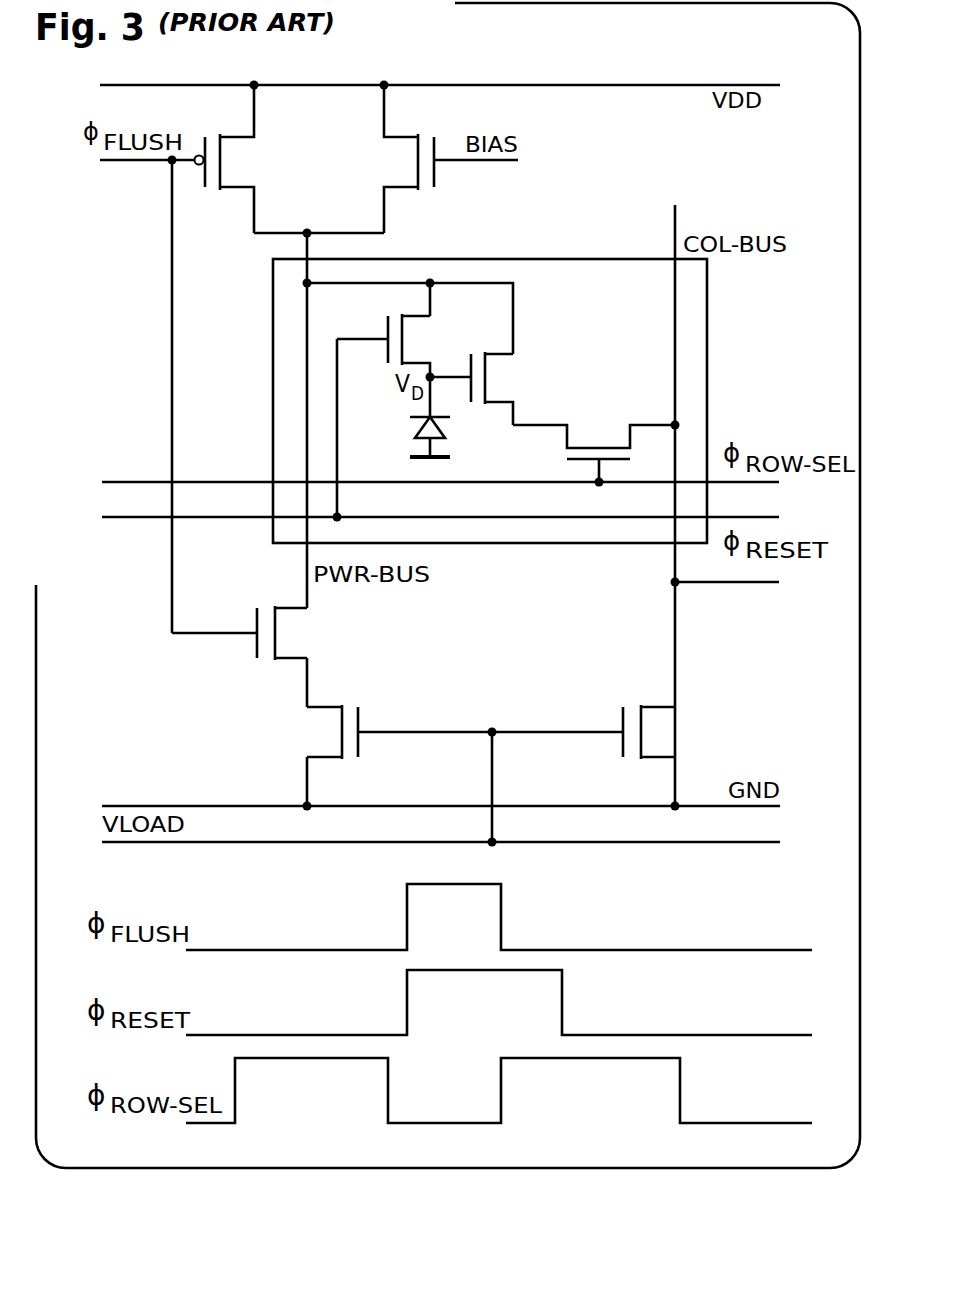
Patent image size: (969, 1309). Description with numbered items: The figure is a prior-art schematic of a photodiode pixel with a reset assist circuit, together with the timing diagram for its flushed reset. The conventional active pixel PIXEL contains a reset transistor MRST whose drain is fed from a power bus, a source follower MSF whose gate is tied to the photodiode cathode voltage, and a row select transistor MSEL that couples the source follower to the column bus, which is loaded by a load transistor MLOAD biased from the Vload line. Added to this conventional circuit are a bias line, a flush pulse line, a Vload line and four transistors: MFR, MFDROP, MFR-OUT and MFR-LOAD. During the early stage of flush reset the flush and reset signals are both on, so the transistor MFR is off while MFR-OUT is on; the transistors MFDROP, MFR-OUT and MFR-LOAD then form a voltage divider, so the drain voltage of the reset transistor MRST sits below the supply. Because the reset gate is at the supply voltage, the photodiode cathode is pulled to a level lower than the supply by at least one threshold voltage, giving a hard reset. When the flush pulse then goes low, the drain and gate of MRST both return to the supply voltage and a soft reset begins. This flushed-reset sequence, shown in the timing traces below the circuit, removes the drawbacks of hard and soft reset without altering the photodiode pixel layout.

The flush-reset transistor MFR is at (190, 159).
The flush drop transistor MFDROP is at (386, 159).
The pixel PIXEL is at (490, 401).
The reset transistor MRST is at (407, 365).
The source follower transistor MSF is at (487, 388).
The row select transistor MSEL is at (594, 439).
The flush-reset output transistor MFR-OUT is at (286, 633).
The flush-reset load transistor MFR-LOAD is at (350, 732).
The load transistor MLOAD is at (614, 732).